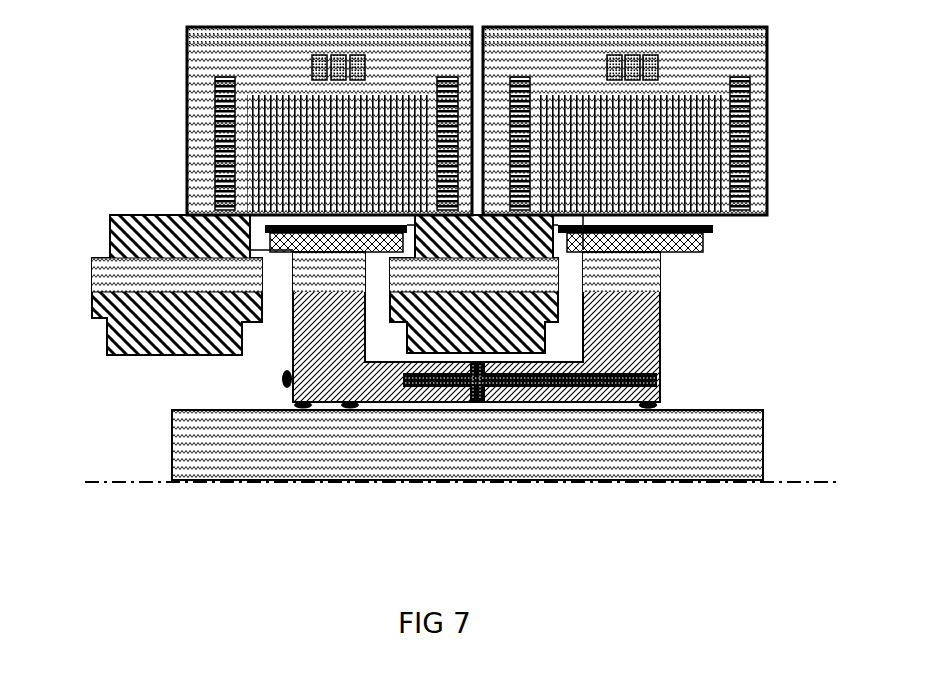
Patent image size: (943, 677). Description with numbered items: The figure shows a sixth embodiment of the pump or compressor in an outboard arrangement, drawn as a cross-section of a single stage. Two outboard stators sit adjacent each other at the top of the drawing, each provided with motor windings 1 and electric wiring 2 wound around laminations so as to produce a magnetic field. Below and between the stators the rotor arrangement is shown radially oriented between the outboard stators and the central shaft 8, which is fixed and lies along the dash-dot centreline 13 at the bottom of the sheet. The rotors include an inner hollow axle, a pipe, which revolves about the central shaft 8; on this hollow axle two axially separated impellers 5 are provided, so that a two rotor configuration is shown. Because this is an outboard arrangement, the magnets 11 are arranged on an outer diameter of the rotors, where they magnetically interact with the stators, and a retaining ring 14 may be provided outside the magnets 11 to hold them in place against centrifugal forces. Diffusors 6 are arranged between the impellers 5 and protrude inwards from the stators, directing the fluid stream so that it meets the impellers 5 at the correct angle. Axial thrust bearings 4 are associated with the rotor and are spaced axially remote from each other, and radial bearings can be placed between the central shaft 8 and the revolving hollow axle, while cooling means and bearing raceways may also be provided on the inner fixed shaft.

The motor windings 1 is at (477, 121).
The electric wiring 2 is at (743, 152).
The axial thrust bearing 4 is at (660, 399).
The impellers 5 is at (653, 303).
The diffusors 6 is at (440, 318).
The central shaft 8 is at (467, 445).
The magnet 11 is at (700, 247).
The axis line 13 is at (145, 483).
The conductive bar 14 is at (714, 219).